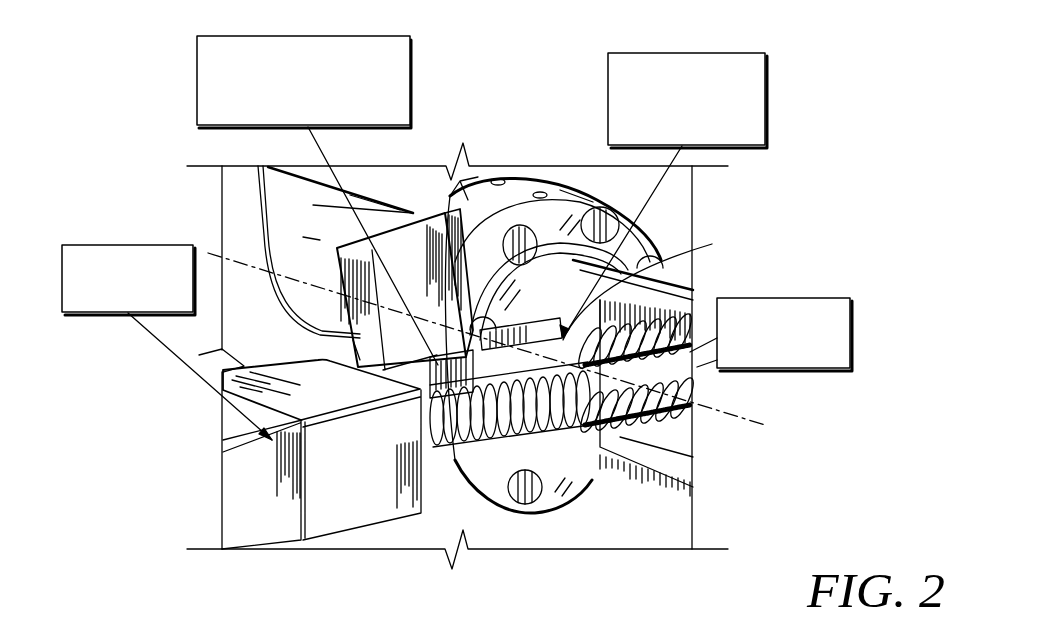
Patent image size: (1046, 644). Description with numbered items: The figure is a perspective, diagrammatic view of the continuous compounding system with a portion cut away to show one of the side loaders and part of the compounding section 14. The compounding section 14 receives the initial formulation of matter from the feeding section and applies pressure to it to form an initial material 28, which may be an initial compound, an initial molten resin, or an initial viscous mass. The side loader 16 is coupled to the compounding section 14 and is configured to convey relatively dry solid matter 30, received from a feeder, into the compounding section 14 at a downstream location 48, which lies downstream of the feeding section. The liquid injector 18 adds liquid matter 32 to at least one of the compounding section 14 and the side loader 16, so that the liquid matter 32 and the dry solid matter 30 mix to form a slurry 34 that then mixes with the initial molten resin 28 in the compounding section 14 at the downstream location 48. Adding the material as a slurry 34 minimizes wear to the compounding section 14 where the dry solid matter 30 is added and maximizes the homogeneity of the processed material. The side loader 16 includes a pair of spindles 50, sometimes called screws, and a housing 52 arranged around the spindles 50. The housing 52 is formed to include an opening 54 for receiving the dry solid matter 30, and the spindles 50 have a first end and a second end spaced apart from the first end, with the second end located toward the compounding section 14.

The compounding section 14 is at (407, 180).
The side loader 16 is at (115, 244).
The liquid injector 18 is at (668, 51).
The initial material 28 is at (641, 320).
The dry solid matter 30 is at (252, 36).
The liquid matter 32 is at (588, 485).
The slurry 34 is at (773, 298).
The downstream location 48 is at (550, 316).
The spindles 50 is at (460, 445).
The housing 52 is at (490, 472).
The opening 54 is at (437, 383).